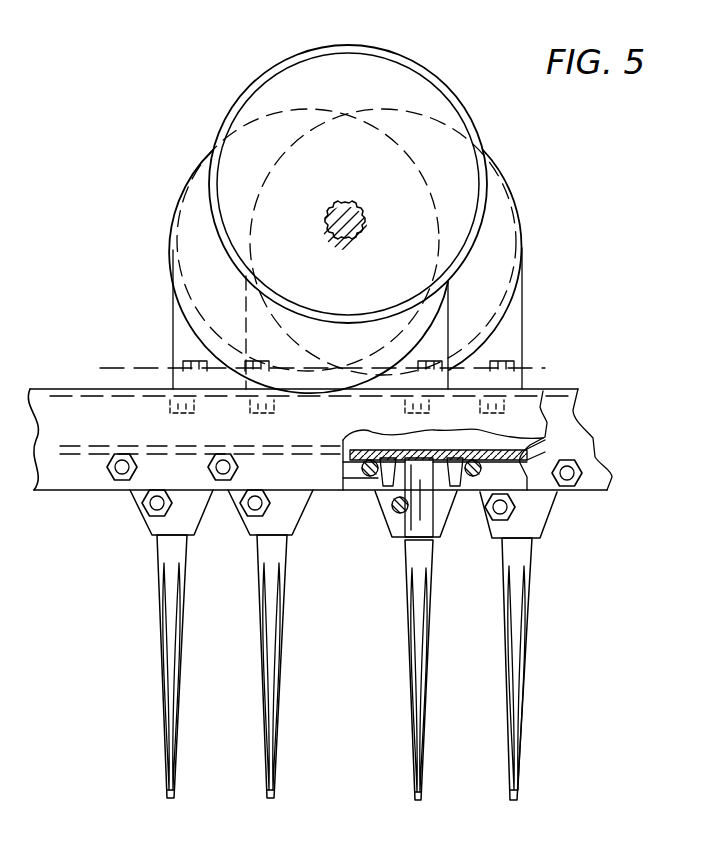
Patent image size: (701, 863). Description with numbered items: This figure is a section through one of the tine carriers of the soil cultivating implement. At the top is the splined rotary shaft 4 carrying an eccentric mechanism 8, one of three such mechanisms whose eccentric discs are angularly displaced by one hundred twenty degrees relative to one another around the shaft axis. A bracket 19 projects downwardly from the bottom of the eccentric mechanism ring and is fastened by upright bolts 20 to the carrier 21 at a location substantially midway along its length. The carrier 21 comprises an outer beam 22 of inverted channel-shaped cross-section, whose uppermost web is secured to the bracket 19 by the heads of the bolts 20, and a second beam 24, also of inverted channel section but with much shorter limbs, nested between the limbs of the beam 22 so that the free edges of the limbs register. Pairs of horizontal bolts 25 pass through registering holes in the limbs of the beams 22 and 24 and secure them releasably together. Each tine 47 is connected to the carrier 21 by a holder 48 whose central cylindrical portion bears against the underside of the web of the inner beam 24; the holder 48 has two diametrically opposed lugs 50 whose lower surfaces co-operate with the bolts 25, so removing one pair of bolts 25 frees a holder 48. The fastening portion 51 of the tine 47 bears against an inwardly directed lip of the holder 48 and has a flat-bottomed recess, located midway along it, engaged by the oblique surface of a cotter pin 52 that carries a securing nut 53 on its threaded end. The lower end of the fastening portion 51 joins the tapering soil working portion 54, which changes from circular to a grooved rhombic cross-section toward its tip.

The rotary shaft 4 is at (378, 222).
The eccentric mechanism 8 is at (377, 40).
The bracket 19 is at (168, 375).
The upright bolt 20 is at (194, 419).
The carrier 21 is at (97, 380).
The beam 22 is at (572, 421).
The second beam 24 is at (373, 447).
The bolt 25 is at (207, 468).
The tine 47 is at (252, 606).
The holder 48 is at (148, 525).
The lug 50 is at (528, 463).
The fastening portion 51 is at (430, 545).
The cotter pin 52 is at (396, 515).
The securing nut 53 is at (143, 505).
The soil working portion 54 is at (265, 747).